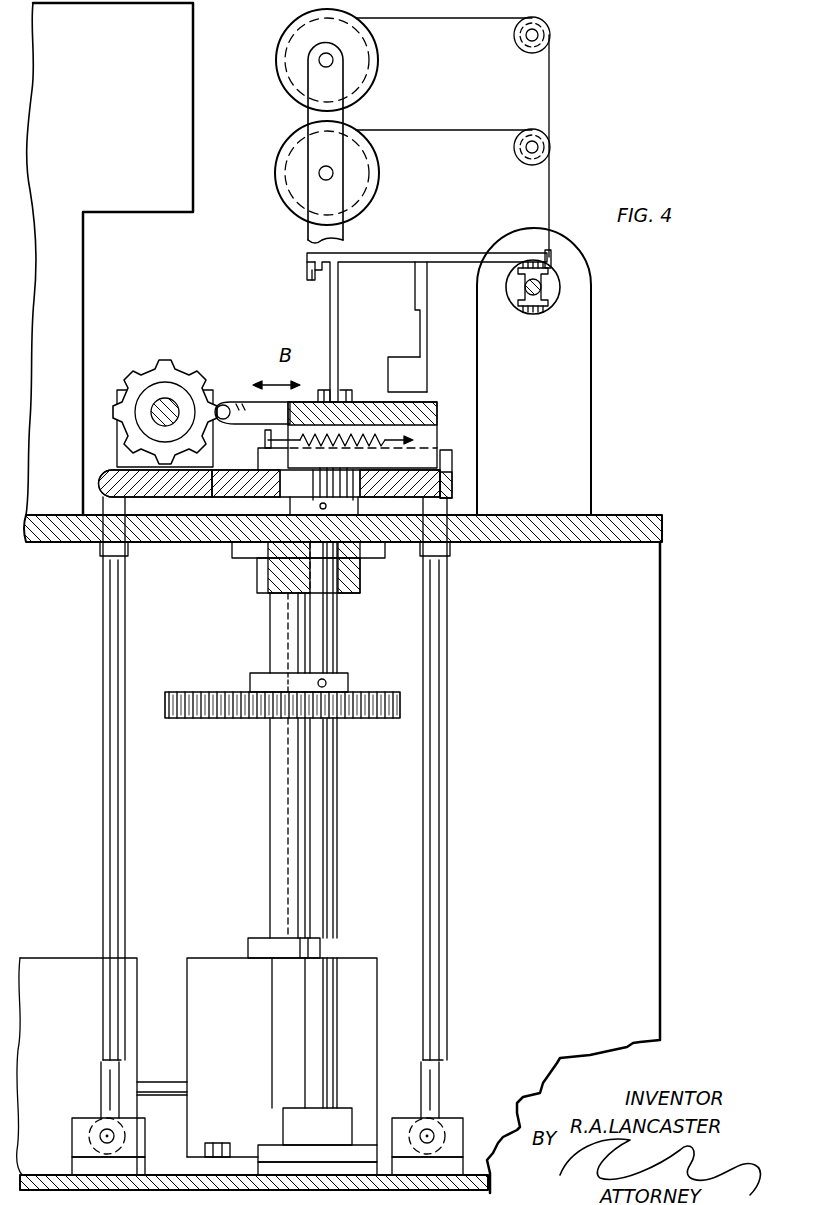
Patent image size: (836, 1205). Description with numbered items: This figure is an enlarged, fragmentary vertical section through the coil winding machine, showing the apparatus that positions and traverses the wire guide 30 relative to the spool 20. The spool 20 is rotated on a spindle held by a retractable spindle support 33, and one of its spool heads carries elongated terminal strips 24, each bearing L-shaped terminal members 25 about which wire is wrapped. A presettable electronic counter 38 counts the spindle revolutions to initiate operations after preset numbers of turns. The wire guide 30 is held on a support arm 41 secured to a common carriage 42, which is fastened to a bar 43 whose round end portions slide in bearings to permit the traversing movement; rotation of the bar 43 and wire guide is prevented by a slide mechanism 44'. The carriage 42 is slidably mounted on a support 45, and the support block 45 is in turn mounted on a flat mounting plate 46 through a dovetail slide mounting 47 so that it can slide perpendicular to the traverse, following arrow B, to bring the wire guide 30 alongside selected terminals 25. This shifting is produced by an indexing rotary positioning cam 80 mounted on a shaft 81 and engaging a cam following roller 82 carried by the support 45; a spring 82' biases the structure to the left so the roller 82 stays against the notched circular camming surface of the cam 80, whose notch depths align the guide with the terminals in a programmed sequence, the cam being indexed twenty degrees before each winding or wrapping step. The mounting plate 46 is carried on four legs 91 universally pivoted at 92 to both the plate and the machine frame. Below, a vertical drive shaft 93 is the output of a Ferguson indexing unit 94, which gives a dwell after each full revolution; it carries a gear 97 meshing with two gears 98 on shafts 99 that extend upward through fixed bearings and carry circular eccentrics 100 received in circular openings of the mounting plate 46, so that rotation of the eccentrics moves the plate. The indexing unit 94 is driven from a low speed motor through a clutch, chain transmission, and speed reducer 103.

The presettable electronic counter 38 is at (175, 122).
The support arm 41 is at (445, 255).
The slide mechanism 44' is at (294, 289).
The carriage 42 is at (428, 332).
The bar 43 is at (388, 370).
The traversing wire guide 30 is at (551, 260).
The retractable spindle support 33 is at (590, 290).
The spool 20 is at (513, 296).
The terminal strip 24 is at (522, 310).
The terminal member 25 is at (535, 312).
The indexing rotary positioning cam 80 is at (176, 361).
The shaft 81 is at (152, 405).
The cam following roller 82 is at (252, 379).
The support 45 is at (437, 440).
The circular eccentric 100 is at (305, 478).
The spring 82' is at (390, 452).
The dovetail slide mounting 47 is at (262, 462).
The universal pivot 92 is at (100, 472).
The mounting plate 46 is at (188, 542).
The leg 91 is at (103, 795).
The gear 97 is at (192, 695).
The gear 98 is at (297, 703).
The shaft 99 is at (315, 797).
The vertical drive shaft 93 is at (290, 830).
The speed reducer 103 is at (50, 962).
The Ferguson indexing unit 94 is at (198, 962).